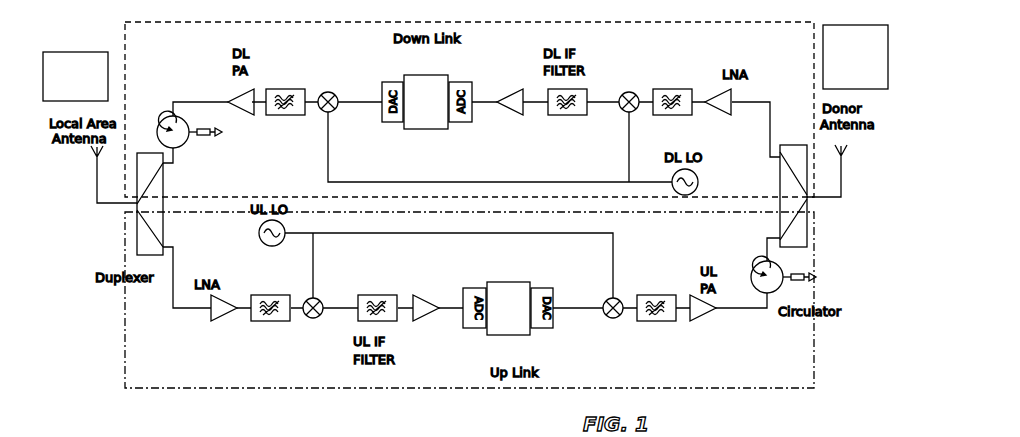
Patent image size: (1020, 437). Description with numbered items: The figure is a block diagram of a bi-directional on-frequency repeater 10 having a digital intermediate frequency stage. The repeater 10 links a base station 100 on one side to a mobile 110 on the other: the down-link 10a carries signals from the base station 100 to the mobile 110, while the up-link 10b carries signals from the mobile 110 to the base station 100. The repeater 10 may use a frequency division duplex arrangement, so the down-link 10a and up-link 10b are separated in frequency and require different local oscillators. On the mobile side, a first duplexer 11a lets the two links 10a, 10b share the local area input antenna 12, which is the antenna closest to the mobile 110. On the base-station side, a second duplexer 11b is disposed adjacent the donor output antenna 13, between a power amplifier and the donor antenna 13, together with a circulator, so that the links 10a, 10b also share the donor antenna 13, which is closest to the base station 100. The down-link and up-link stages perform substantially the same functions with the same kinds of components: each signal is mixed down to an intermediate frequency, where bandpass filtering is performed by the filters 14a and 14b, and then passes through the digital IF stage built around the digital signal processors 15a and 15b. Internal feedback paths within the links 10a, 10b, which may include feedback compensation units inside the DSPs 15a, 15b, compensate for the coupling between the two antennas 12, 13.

The repeater 10 is at (287, 405).
The down-link 10a is at (381, 47).
The up-link 10b is at (570, 367).
The first duplexer 11a is at (137, 210).
The second duplexer 11b is at (810, 200).
The local area antenna 12 is at (95, 160).
The donor antenna 13 is at (845, 151).
The filter 14a is at (567, 117).
The filter 14b is at (376, 295).
The digital signal processor 15a is at (428, 129).
The digital signal processor 15b is at (505, 282).
The base station 100 is at (869, 52).
The mobile 110 is at (89, 86).